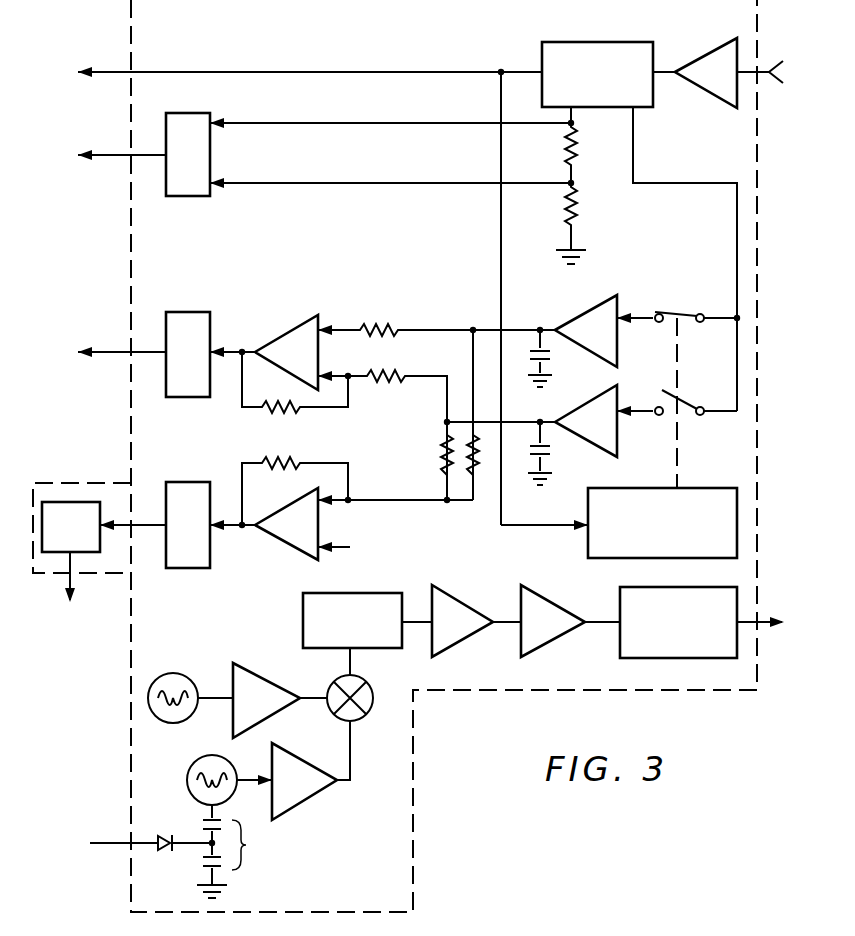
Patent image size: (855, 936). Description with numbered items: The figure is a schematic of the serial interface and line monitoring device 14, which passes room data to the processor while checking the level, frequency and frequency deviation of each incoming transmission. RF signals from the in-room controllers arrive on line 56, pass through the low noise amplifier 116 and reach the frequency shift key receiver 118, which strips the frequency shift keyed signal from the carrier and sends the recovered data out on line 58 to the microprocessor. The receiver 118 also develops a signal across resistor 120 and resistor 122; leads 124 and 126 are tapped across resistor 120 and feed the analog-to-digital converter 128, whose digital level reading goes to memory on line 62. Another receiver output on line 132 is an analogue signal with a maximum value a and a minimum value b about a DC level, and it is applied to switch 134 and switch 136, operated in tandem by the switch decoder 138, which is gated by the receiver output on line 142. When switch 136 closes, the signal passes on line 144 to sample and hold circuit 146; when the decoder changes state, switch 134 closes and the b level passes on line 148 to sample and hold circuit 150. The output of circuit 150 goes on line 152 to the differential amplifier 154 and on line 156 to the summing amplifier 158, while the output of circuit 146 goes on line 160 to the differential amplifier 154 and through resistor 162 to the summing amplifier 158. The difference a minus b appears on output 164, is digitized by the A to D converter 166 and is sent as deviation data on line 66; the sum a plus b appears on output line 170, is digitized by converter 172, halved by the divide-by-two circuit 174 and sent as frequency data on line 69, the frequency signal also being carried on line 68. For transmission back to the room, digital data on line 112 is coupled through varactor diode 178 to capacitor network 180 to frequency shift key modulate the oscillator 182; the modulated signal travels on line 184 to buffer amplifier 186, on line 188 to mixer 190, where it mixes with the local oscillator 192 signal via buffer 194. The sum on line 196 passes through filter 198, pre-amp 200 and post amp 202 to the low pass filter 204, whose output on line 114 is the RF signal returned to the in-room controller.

The serial interface and line monitoring device 14 is at (131, 6).
The line 56 is at (769, 70).
The line 58 is at (108, 72).
The line 62 is at (108, 155).
The line 66 is at (108, 352).
The line 68 is at (128, 522).
The line 69 is at (70, 585).
The line 112 is at (110, 841).
The line 114 is at (743, 618).
The low noise amplifier 116 is at (712, 86).
The frequency shift key receiver 118 is at (627, 24).
The resistor 120 is at (566, 150).
The resistor 122 is at (566, 220).
The lead 124 is at (428, 126).
The lead 126 is at (437, 186).
The analog-to-digital converter 128 is at (210, 148).
The line 132 is at (703, 185).
The switch 134 is at (686, 313).
The switch 136 is at (680, 397).
The switch decoder 138 is at (706, 493).
The line 142 is at (549, 527).
The line 144 is at (642, 408).
The sample and hold circuit 146 is at (587, 441).
The line 148 is at (640, 316).
The sample and hold circuit 150 is at (586, 322).
The line 152 is at (437, 330).
The differential amplifier 154 is at (295, 327).
The line 156 is at (473, 354).
The summing amplifier 158 is at (304, 521).
The line 160 is at (447, 403).
The resistor 162 is at (445, 458).
The output 164 is at (238, 348).
The A to D converter 166 is at (190, 312).
The output line 170 is at (231, 529).
The converter 172 is at (192, 482).
The divide-by-2 circuit 174 is at (100, 546).
The varactor diode 178 is at (162, 853).
The capacitor network 180 is at (245, 851).
The oscillator 182 is at (188, 773).
The line 184 is at (250, 776).
The buffer amplifier 186 is at (303, 777).
The line 188 is at (352, 769).
The mixer 190 is at (372, 708).
The local oscillator 192 is at (177, 676).
The buffer 194 is at (247, 686).
The line 196 is at (350, 662).
The filter 198 is at (337, 593).
The pre-amp 200 is at (468, 631).
The post amp 202 is at (556, 631).
The low pass filter 204 is at (638, 587).